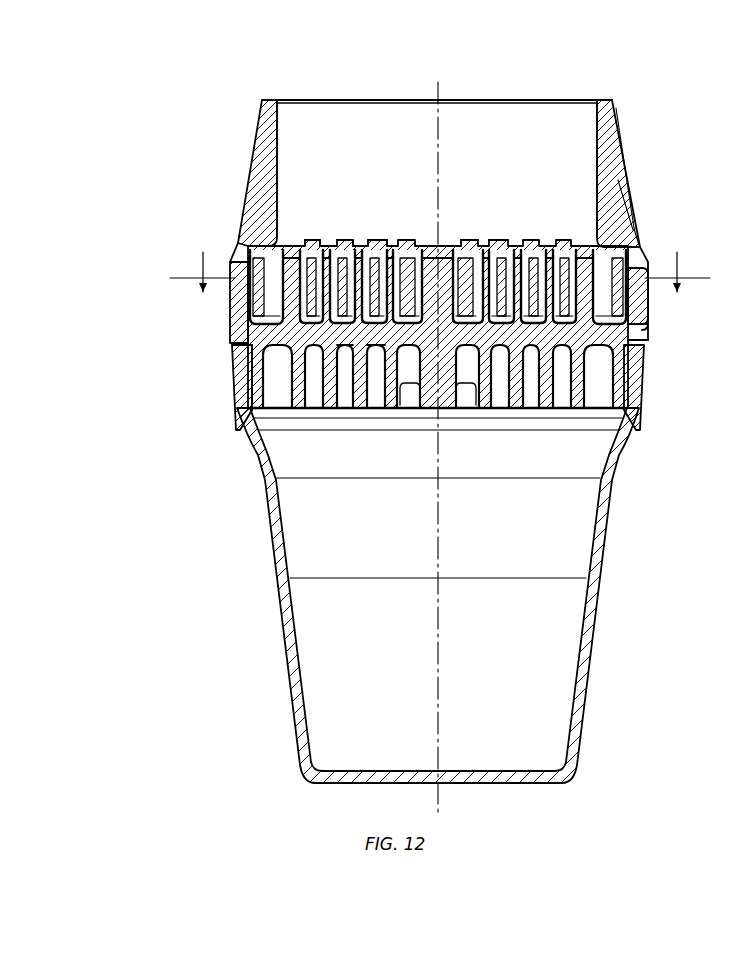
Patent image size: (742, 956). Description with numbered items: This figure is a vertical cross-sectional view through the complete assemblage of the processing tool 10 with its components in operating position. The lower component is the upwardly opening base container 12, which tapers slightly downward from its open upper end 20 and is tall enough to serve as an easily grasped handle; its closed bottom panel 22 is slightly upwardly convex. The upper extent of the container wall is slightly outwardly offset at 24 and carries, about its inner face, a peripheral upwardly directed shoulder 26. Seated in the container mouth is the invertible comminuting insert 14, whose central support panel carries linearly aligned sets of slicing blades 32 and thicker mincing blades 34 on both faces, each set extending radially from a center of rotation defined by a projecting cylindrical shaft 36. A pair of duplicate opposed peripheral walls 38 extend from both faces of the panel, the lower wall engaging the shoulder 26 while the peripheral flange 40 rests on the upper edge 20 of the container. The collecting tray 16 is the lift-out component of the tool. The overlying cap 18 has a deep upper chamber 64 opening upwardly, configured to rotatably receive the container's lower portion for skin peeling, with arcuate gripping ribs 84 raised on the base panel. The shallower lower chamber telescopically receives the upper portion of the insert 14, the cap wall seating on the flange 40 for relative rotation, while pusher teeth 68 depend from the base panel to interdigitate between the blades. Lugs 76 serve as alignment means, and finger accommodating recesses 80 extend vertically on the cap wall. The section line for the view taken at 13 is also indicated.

The processing tool 10 is at (152, 390).
The base container 12 is at (459, 616).
The section line 13- 13 is at (440, 272).
The comminuting insert 14 is at (419, 356).
The collecting tray 16 is at (663, 258).
The cap 18 is at (467, 198).
The open upper end 20 is at (649, 337).
The bottom panel 22 is at (345, 786).
The outwardly offset upper extent 24 is at (238, 362).
The upwardly directed shoulder 26 is at (603, 408).
The slicing blades 32 is at (393, 243).
The mincing blades 34 is at (382, 408).
The cylindrical shaft 36 is at (455, 250).
The peripheral walls 38 is at (243, 243).
The peripheral flange 40 is at (649, 327).
The upper chamber 64 is at (558, 130).
The pusher teeth 68 is at (497, 246).
The lugs 76 is at (641, 311).
The finger accommodating recesses 80 is at (618, 185).
The gripping ribs 84 is at (318, 243).